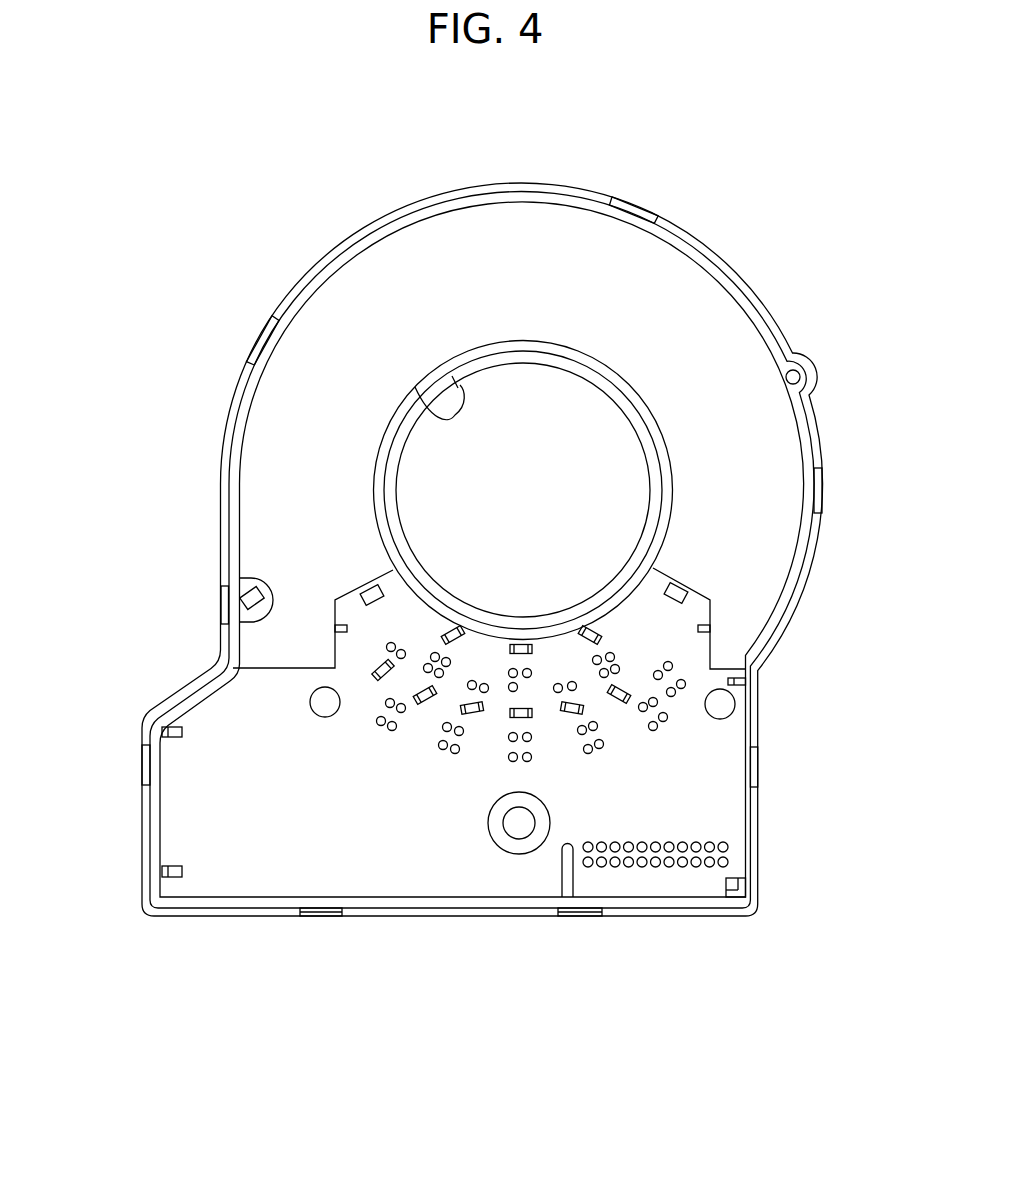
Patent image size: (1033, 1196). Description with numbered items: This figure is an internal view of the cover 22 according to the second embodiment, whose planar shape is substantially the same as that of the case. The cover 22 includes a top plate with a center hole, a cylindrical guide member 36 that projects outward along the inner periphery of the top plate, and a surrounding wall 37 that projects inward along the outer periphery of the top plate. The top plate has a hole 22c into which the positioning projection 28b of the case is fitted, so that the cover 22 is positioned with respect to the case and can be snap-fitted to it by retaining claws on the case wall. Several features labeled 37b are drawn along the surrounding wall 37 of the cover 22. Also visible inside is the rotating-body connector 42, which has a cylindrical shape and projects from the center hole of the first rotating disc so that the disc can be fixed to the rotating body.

The cover 22 is at (821, 428).
The hole 22c is at (520, 825).
The positioning projection 28b is at (517, 830).
The cylindrical guide member 36 is at (390, 433).
The surrounding wall 37 is at (753, 292).
The engagement claws 37b is at (633, 213).
The rotating-body connector 42 is at (415, 387).